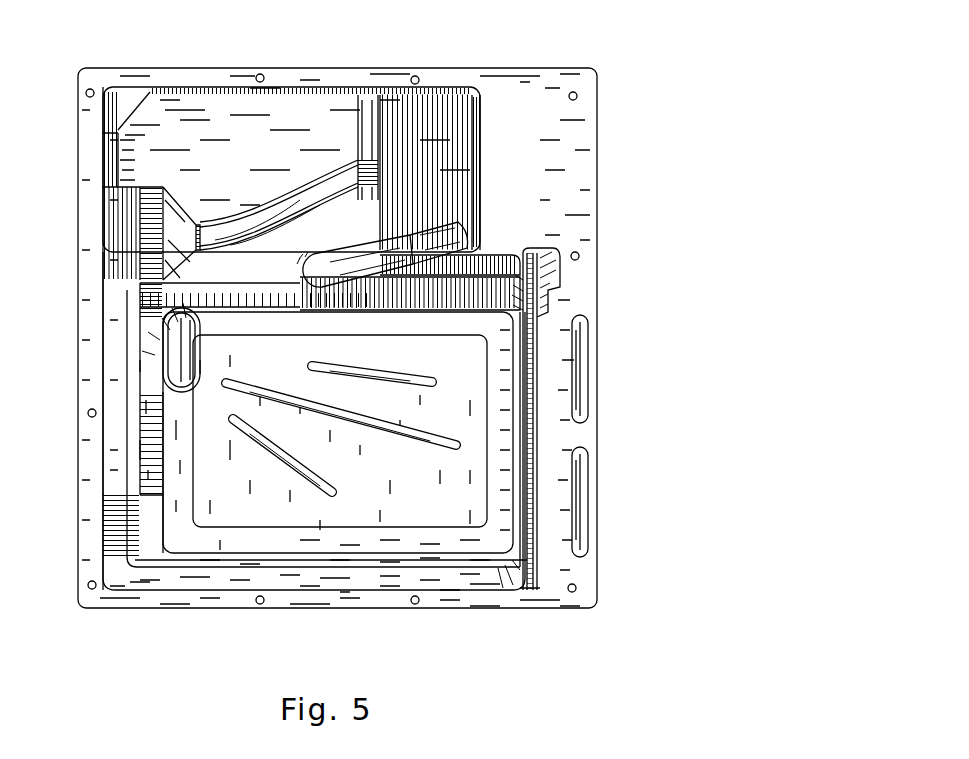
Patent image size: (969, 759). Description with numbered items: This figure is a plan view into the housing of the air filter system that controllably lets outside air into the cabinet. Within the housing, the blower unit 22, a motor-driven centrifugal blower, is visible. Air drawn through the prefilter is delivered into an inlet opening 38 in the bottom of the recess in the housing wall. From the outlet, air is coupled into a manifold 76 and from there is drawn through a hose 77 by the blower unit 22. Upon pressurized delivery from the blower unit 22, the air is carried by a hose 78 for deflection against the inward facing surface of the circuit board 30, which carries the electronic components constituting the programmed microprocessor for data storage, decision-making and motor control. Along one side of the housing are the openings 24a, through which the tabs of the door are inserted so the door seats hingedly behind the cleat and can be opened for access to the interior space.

The circuit board 30 is at (241, 108).
The hose 77 is at (322, 165).
The hose 78 is at (382, 200).
The blower unit 22 is at (404, 110).
The inlet opening 38 is at (160, 325).
The manifold 76 is at (117, 420).
The openings 24a is at (580, 317).